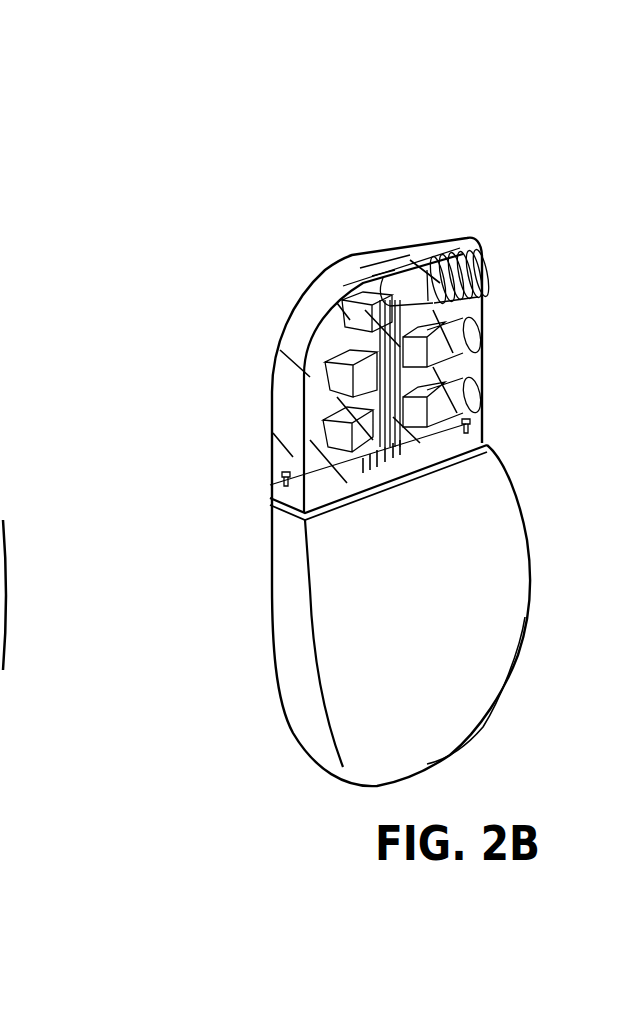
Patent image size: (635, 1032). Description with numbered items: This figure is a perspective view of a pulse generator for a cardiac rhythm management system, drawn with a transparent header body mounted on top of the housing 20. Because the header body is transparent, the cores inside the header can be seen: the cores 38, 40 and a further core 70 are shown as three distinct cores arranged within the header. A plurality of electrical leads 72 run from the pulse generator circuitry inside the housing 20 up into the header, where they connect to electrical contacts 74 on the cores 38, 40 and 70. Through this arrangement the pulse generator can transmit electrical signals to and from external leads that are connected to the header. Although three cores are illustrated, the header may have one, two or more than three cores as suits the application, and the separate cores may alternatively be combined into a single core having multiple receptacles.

The housing 20 is at (283, 693).
The electrical contacts 74 is at (382, 300).
The core 70 is at (470, 278).
The electrical leads 72 is at (390, 374).
The core 40 is at (447, 348).
The core 38 is at (450, 410).